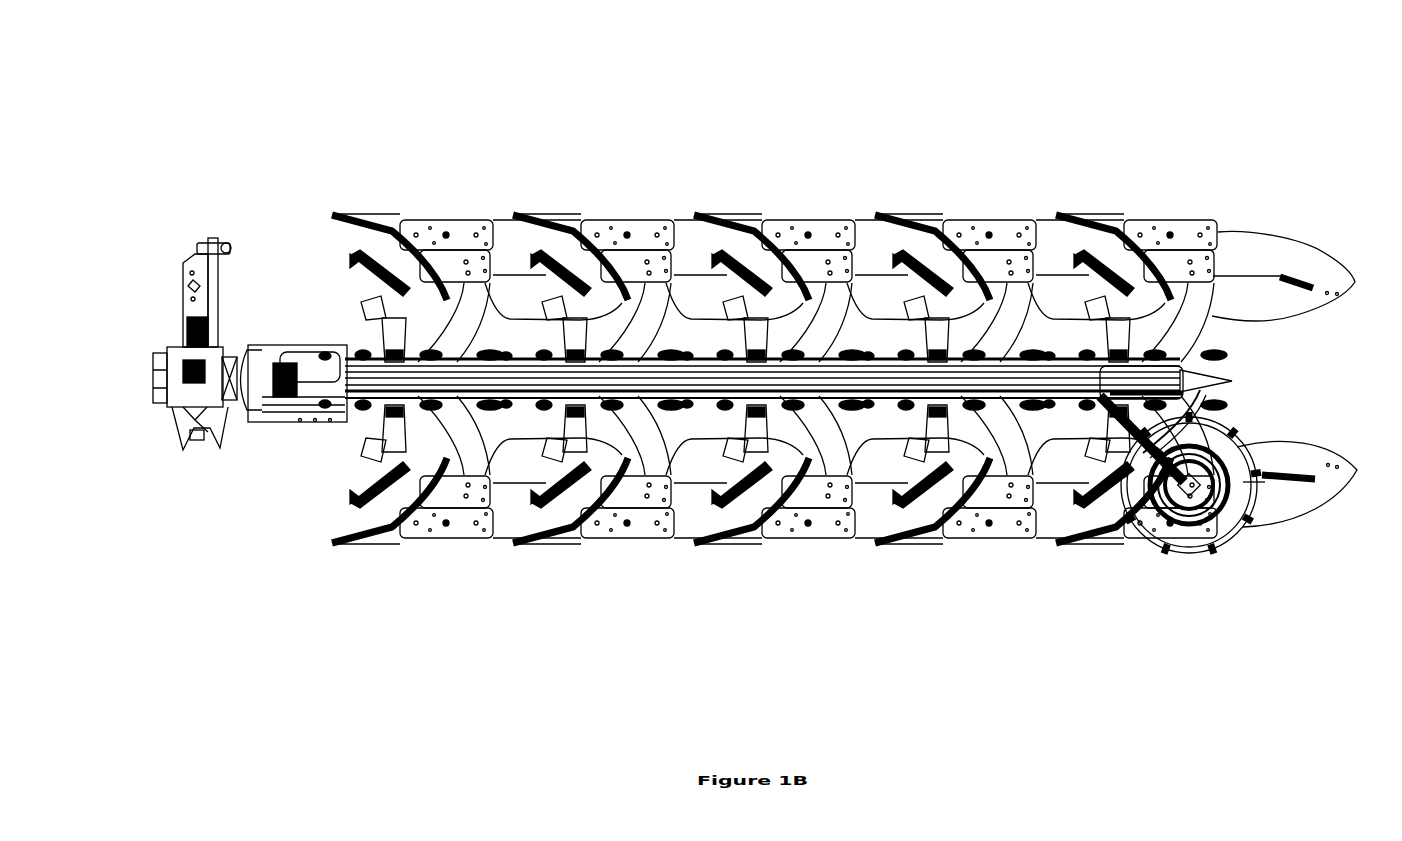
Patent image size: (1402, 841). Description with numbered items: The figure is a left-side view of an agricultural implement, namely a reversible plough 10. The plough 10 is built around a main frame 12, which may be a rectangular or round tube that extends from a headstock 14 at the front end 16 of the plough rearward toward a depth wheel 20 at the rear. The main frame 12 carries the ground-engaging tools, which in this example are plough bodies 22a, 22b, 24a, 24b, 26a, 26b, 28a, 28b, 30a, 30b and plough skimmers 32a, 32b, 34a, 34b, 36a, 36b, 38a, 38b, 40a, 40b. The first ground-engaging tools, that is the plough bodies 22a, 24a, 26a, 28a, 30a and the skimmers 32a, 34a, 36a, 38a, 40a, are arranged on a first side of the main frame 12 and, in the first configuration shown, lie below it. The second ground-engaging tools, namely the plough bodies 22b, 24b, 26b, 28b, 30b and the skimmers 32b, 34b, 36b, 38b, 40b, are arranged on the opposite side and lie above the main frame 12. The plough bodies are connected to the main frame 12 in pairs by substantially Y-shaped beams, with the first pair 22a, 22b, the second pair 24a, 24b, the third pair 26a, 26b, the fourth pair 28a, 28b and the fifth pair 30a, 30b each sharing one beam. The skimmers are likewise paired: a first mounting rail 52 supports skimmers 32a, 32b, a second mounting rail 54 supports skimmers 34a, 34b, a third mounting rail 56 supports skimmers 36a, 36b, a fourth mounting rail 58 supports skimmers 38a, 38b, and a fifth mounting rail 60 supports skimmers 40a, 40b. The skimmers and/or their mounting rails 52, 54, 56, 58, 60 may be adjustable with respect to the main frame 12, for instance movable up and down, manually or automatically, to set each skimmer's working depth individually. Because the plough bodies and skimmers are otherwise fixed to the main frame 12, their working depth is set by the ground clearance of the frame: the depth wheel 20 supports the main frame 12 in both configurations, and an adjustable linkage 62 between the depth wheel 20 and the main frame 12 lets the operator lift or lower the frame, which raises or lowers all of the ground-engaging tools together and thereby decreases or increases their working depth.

The plough 10 is at (134, 72).
The main frame 12 is at (903, 363).
The headstock 14 is at (193, 310).
The front end 16 is at (158, 398).
The depth wheel 20 is at (1233, 455).
The plough body 22a is at (416, 553).
The plough body 22b is at (422, 203).
The plough body 24a is at (629, 553).
The plough body 24b is at (664, 203).
The plough body 26a is at (821, 553).
The plough body 26b is at (842, 203).
The plough body 28a is at (991, 553).
The plough body 28b is at (1024, 203).
The plough body 30a is at (1141, 553).
The plough body 30b is at (1187, 204).
The skimmer 32a is at (373, 448).
The skimmer 32b is at (373, 307).
The skimmer 34a is at (558, 440).
The skimmer 34b is at (527, 267).
The skimmer 36a is at (730, 467).
The skimmer 36b is at (712, 257).
The skimmer 38a is at (922, 448).
The skimmer 38b is at (920, 285).
The skimmer 40a is at (1107, 457).
The skimmer 40b is at (1103, 280).
The first mounting rail 52 is at (390, 427).
The second mounting rail 54 is at (568, 427).
The third mounting rail 56 is at (750, 427).
The fourth mounting rail 58 is at (930, 427).
The fifth mounting rail 60 is at (1113, 430).
The adjustable linkage 62 is at (1197, 400).